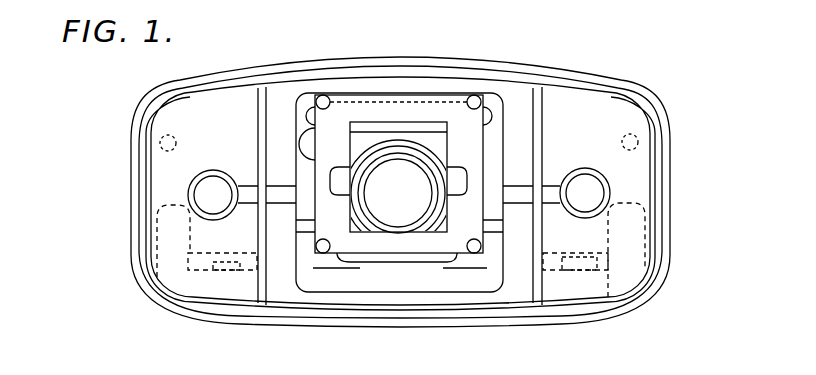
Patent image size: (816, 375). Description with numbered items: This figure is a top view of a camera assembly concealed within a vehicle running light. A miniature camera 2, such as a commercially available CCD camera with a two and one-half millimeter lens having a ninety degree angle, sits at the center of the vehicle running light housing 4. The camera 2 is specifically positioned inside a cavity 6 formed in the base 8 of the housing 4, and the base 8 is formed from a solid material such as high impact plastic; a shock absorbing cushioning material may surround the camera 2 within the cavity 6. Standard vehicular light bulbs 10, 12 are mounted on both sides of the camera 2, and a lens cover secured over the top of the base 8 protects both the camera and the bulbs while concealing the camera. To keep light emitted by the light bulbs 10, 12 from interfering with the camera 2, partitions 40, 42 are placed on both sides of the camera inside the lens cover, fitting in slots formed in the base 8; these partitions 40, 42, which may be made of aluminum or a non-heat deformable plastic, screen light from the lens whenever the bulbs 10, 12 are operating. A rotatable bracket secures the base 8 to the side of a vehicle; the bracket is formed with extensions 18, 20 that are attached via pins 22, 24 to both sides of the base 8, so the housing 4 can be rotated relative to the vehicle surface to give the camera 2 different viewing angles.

The miniature camera 2 is at (407, 182).
The vehicle running light housing 4 is at (692, 99).
The cavity 6 is at (402, 283).
The base 8 is at (382, 59).
The light bulb 10 is at (592, 191).
The light bulb 12 is at (212, 195).
The extension 18 is at (668, 237).
The extension 20 is at (145, 250).
The pin 22 is at (578, 270).
The pin 24 is at (213, 270).
The partition 40 is at (543, 129).
The partition 42 is at (258, 122).